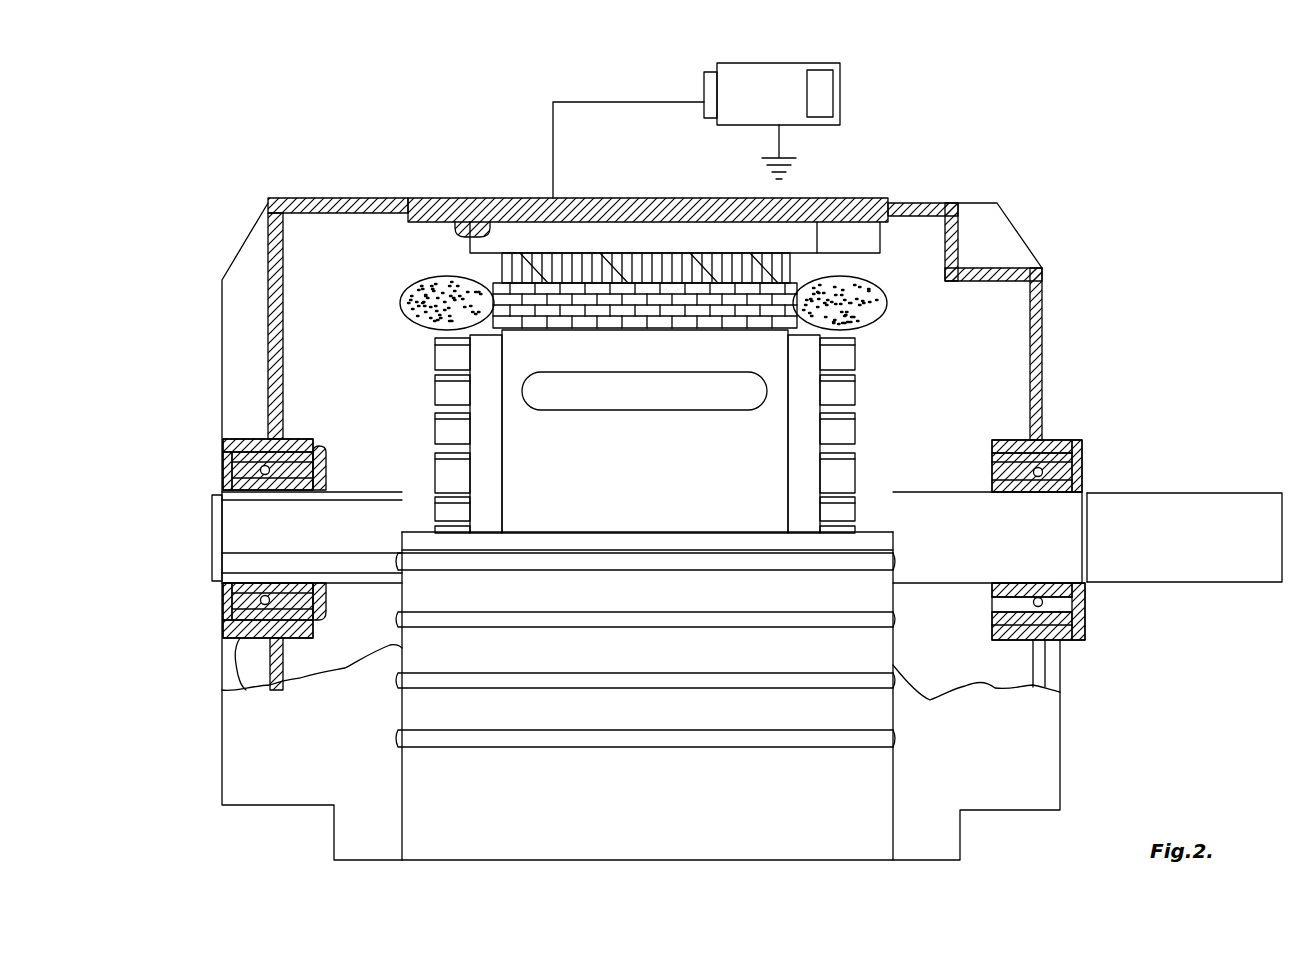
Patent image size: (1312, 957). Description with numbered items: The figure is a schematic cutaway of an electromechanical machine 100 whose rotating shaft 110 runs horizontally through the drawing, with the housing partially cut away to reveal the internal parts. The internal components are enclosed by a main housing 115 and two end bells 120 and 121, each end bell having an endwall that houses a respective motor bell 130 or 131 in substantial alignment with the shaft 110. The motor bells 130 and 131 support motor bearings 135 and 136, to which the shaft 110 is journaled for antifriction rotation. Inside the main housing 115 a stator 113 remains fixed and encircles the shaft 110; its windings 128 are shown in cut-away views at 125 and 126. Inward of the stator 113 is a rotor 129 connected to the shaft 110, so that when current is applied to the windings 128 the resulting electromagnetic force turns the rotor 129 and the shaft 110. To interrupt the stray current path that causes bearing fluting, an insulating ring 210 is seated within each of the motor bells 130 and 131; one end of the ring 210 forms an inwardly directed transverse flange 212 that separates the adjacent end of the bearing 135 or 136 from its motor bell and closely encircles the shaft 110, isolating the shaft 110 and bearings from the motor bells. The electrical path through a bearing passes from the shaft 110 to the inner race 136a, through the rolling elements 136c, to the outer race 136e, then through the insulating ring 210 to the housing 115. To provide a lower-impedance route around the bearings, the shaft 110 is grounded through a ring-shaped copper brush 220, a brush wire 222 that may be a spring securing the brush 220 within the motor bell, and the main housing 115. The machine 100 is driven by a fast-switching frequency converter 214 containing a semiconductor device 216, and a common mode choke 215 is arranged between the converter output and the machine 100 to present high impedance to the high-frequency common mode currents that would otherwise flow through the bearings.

The electromechanical machine 100 is at (1115, 267).
The rotating shaft 110 is at (1178, 497).
The stator 113 is at (517, 242).
The main housing 115 is at (606, 200).
The end bell 120 is at (932, 203).
The end bell 121 is at (331, 198).
The cut-away view of windings 125 is at (410, 283).
The cut-away view of windings 126 is at (889, 300).
The windings 128 is at (678, 283).
The rotor 129 is at (780, 423).
The motor bell 130 is at (1072, 440).
The motor bell 131 is at (270, 660).
The motor bearing 135 is at (1085, 586).
The motor bearing 136 is at (230, 610).
The inner race 136a is at (265, 493).
The rolling elements 136c is at (250, 478).
The outer race 136e is at (233, 455).
The insulating ring 210 is at (265, 445).
The flange 212 is at (228, 470).
The fast-switching frequency converter 214 is at (840, 93).
The common mode choke 215 is at (704, 95).
The semiconductor device 216 is at (826, 70).
The brush 220 is at (327, 478).
The brush wire 222 is at (318, 445).